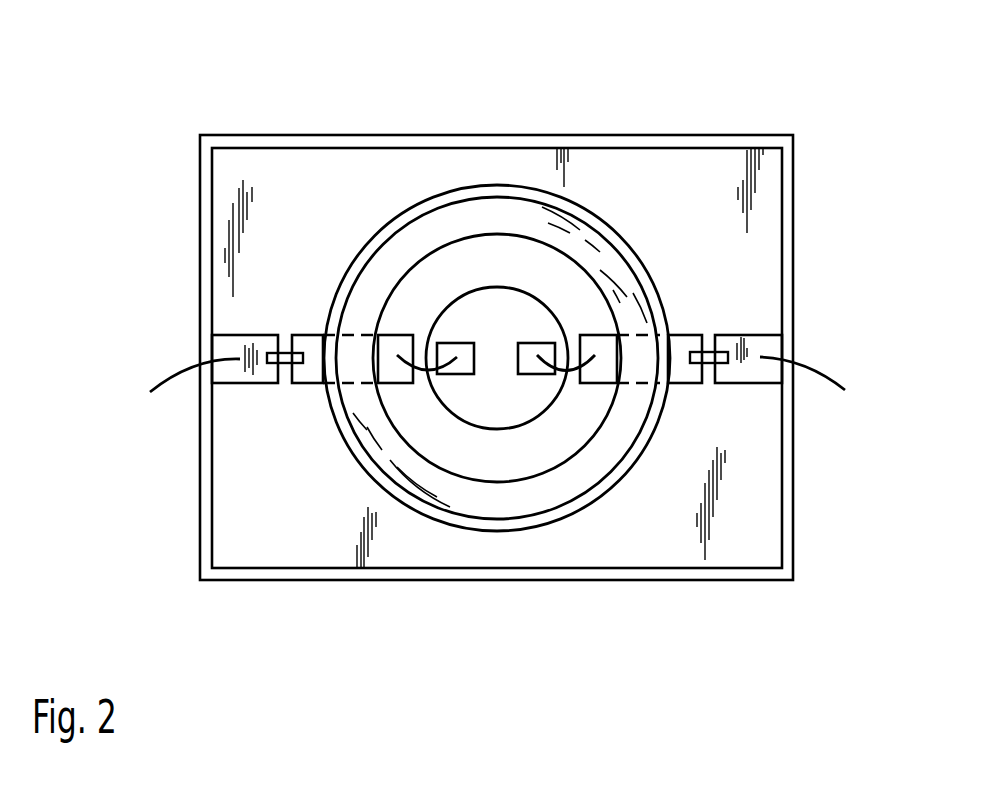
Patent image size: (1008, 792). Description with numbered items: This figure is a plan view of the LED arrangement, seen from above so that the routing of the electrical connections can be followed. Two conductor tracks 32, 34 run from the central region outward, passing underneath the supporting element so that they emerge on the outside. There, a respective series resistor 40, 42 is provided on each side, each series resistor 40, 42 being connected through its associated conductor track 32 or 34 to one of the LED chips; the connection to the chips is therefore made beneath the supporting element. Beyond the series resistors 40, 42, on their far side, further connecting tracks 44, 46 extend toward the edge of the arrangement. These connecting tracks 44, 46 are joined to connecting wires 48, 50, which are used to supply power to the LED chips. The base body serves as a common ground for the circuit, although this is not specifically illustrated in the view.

The conductor track 32 is at (323, 383).
The conductor track 34 is at (670, 380).
The series resistor 40 is at (284, 353).
The series resistor 42 is at (712, 352).
The connecting track 44 is at (230, 346).
The connecting track 46 is at (767, 345).
The connecting wire 48 is at (173, 378).
The connecting wire 50 is at (823, 377).